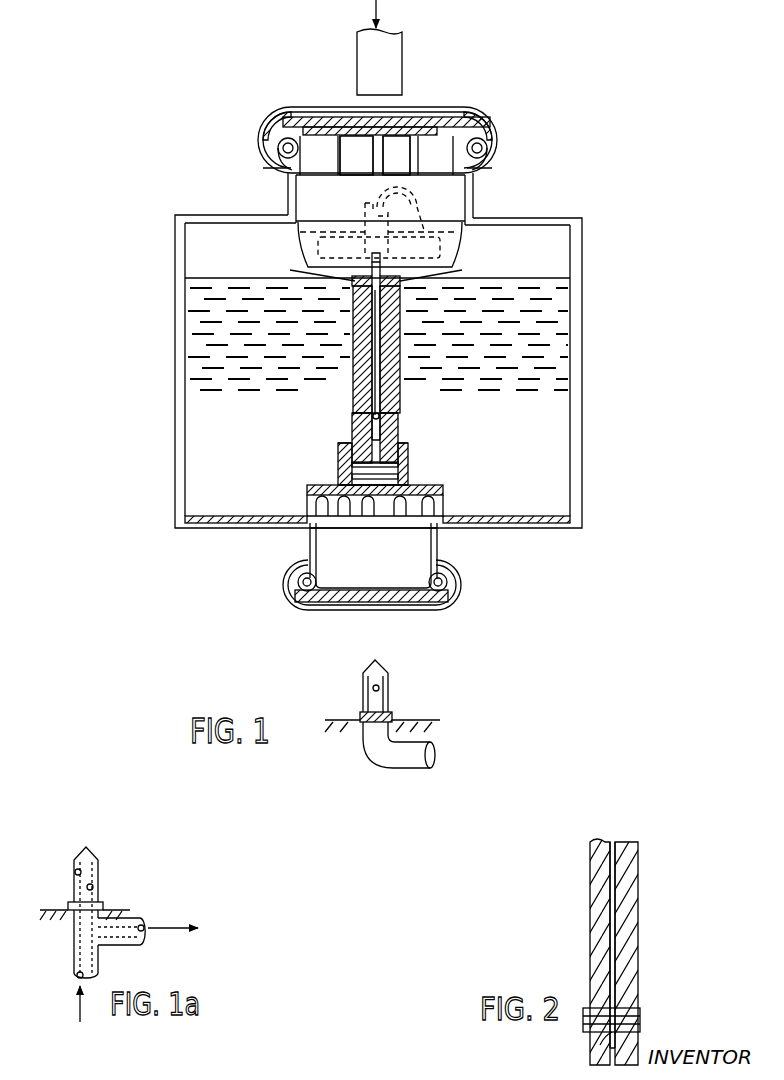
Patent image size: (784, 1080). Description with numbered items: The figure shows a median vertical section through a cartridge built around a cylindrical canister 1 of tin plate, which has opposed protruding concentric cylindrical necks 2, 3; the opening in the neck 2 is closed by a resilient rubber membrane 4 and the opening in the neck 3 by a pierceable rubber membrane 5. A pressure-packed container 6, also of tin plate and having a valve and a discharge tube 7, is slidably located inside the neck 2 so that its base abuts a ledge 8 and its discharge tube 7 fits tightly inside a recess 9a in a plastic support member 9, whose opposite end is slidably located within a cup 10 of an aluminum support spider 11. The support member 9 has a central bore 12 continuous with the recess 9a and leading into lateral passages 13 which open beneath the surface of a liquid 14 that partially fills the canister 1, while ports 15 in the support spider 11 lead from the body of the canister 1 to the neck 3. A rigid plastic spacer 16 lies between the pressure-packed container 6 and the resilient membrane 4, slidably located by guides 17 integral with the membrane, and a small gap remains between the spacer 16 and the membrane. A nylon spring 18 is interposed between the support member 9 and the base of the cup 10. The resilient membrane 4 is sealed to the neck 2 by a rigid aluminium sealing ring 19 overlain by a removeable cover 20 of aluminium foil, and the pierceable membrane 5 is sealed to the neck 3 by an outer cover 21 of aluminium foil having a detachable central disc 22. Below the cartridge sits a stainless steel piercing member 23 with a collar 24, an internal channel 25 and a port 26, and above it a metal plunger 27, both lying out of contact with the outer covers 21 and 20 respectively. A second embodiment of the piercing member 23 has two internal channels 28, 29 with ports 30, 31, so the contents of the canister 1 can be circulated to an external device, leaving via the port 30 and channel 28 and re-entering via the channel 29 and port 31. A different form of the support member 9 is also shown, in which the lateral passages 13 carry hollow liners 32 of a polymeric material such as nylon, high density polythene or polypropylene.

In FIG. 1, the cylindrical canister 1 is at (582, 248).
In FIG. 1, the neck 2 is at (282, 200).
In FIG. 1, the neck 3 is at (310, 551).
In FIG. 1, the resilient rubber membrane 4 is at (290, 128).
In FIG. 1, the pierceable rubber membrane 5 is at (368, 587).
In FIG. 1, the pressure-packed container 6 is at (460, 210).
In FIG. 1, the discharge tube 7 is at (402, 277).
In FIG. 1, the ledge 8 is at (284, 180).
In FIG. 1, the support member 9 is at (393, 399).
In FIG. 2, the support member 9 is at (628, 908).
In FIG. 1, the recess 9a is at (352, 279).
In FIG. 1, the cup 10 is at (414, 452).
In FIG. 1, the support spider 11 is at (307, 500).
In FIG. 1, the central bore 12 is at (352, 392).
In FIG. 2, the central bore 12 is at (602, 882).
In FIG. 1, the lateral passages 13 is at (352, 428).
In FIG. 2, the lateral passages 13 is at (641, 1020).
In FIG. 1, the liquid 14 is at (540, 300).
In FIG. 1, the ports 15 is at (483, 516).
In FIG. 1, the spacer 16 is at (353, 162).
In FIG. 1, the guides 17 is at (416, 162).
In FIG. 1, the nylon spring 18 is at (352, 464).
In FIG. 1, the sealing ring 19 is at (494, 133).
In FIG. 1, the removeable cover 20 is at (482, 105).
In FIG. 1, the outer cover 21 is at (461, 600).
In FIG. 1, the detachable central disc 22 is at (365, 602).
In FIG. 1, the piercing member 23 is at (390, 695).
In FIG. 1A, the piercing member 23 is at (96, 858).
In FIG. 1, the collar 24 is at (394, 718).
In FIG. 1A, the collar 24 is at (68, 907).
In FIG. 1, the internal channel 25 is at (434, 755).
In FIG. 1, the port 26 is at (371, 688).
In FIG. 1, the plunger 27 is at (396, 68).
In FIG. 1A, the internal channel 28 is at (124, 940).
In FIG. 1A, the internal channel 29 is at (74, 957).
In FIG. 1A, the port 30 is at (94, 887).
In FIG. 1A, the port 31 is at (75, 872).
In FIG. 2, the hollow liners 32 is at (598, 1042).